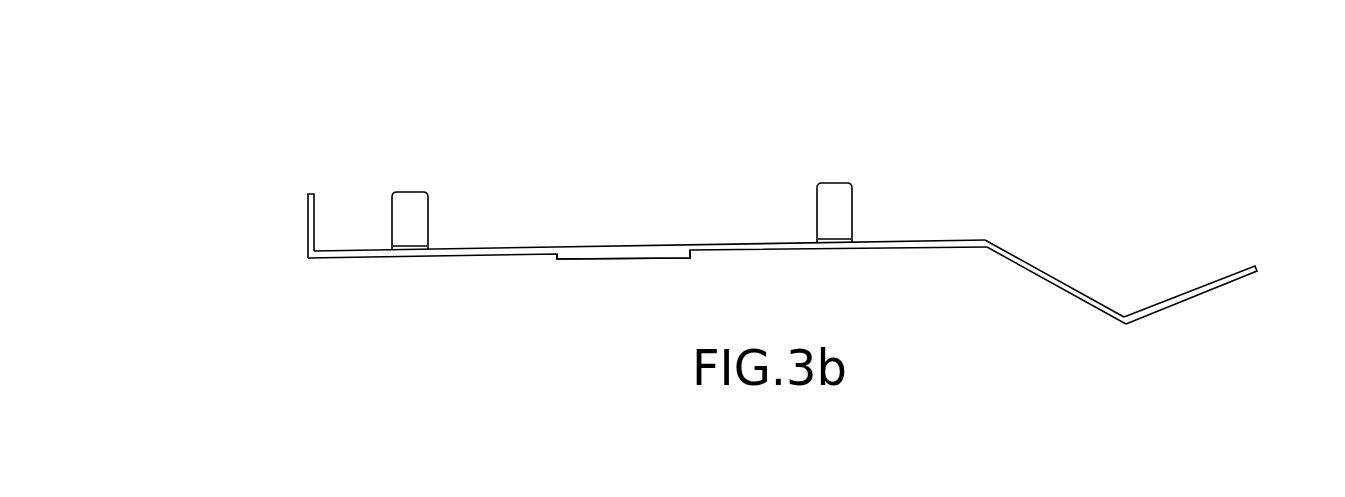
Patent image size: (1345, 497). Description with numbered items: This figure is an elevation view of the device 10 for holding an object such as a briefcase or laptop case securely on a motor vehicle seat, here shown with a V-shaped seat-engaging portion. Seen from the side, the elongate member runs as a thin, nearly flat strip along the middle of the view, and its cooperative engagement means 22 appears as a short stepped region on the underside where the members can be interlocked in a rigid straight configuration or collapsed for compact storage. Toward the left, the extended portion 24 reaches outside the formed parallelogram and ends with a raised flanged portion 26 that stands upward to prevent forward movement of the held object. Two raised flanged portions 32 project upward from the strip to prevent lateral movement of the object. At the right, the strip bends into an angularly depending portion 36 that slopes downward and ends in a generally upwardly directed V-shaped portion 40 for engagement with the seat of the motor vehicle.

The device 10 is at (737, 250).
The cooperative engagement means 22 is at (590, 280).
The extended portion 24 is at (353, 260).
The raised flanged portion 26 is at (307, 220).
The raised flanged portion 32 is at (420, 202).
The angularly depending portion 36 is at (1059, 278).
The V-shaped portion 40 is at (1135, 315).